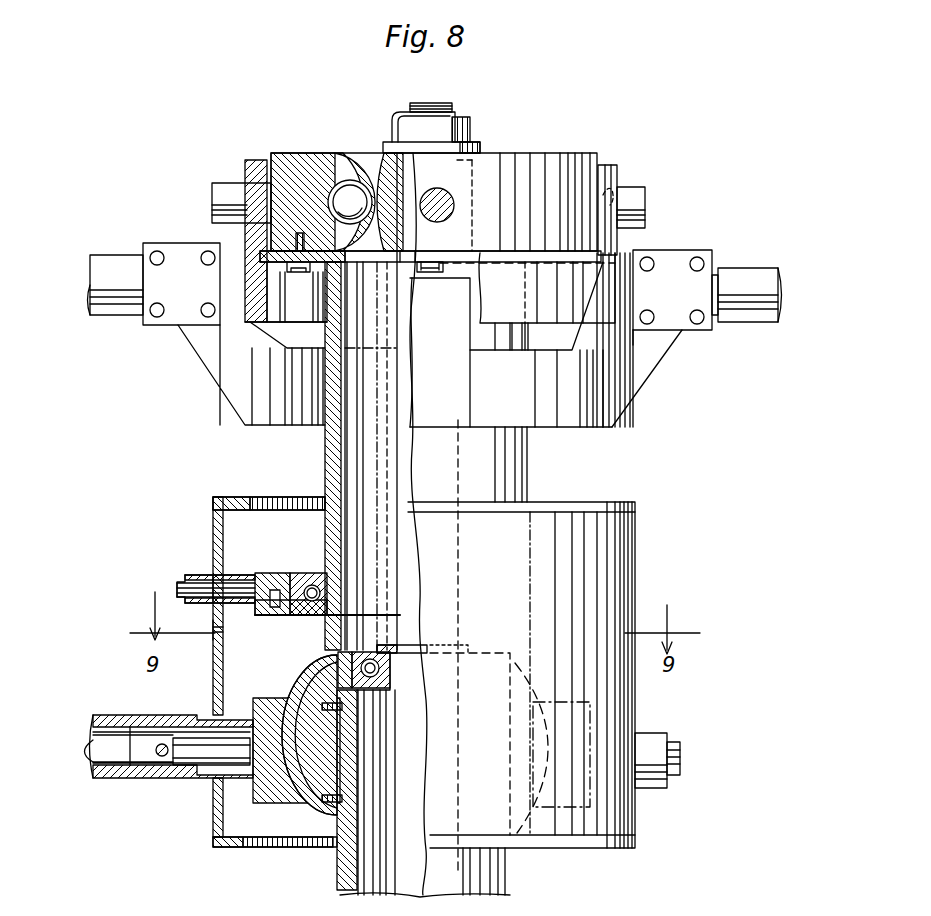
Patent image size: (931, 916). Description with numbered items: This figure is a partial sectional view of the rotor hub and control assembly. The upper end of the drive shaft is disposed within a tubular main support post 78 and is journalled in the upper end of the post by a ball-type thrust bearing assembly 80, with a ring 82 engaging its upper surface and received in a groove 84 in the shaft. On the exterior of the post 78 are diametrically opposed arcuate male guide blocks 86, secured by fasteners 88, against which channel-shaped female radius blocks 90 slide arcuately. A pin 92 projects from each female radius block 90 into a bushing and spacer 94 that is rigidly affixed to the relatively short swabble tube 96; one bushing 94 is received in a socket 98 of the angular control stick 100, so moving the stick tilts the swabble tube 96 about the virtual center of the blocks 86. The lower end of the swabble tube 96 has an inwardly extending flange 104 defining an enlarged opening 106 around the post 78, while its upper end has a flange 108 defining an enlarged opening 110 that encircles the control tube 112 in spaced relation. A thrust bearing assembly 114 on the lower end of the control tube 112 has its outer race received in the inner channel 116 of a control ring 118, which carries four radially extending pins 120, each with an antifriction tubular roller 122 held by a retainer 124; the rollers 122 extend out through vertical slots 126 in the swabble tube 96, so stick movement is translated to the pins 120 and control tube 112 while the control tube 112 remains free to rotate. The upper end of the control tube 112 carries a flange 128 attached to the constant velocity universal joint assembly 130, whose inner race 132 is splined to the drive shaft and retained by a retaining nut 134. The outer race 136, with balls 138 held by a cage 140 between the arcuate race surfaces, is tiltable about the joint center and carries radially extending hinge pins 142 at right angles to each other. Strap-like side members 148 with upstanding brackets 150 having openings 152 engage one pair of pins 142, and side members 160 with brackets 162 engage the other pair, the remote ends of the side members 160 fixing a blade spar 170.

The tubular main support post 78 is at (343, 882).
The bearing assembly 80 is at (364, 653).
The ring 82 is at (392, 656).
The groove 84 is at (408, 645).
The arcuate guide blocks 86 is at (316, 811).
The fasteners 88 is at (348, 798).
The female radius block 90 is at (273, 786).
The pin 92 is at (668, 762).
The bushing and spacer 94 is at (641, 737).
The swabble tube 96 is at (624, 558).
The socket 98 is at (160, 730).
The control stick 100 is at (103, 783).
The inwardly extending flange 104 is at (224, 846).
The enlarged opening 106 is at (258, 847).
The inwardly extending flange 108 is at (228, 503).
The enlarged opening 110 is at (279, 490).
The control tube 112 is at (332, 440).
The bearing assembly 114 is at (322, 594).
The inner channel 116 is at (298, 580).
The control ring 118 is at (268, 576).
The radially extending pins 120 is at (201, 590).
The antifriction tubular roller 122 is at (213, 604).
The retainer 124 is at (181, 591).
The vertical slots 126 is at (226, 622).
The flange 128 is at (286, 290).
The constant velocity universal joint assembly 130 is at (530, 136).
The inner race 132 is at (381, 176).
The retaining nut 134 is at (453, 116).
The outer race 136 is at (293, 167).
The balls 138 is at (430, 266).
The cage 140 is at (343, 173).
The pins 142 is at (228, 197).
The side members 148 is at (583, 312).
The upstanding brackets 150 is at (615, 243).
The openings 152 is at (628, 178).
The side members 160 is at (598, 402).
The brackets 162 is at (445, 352).
The blade spar 170 is at (746, 287).